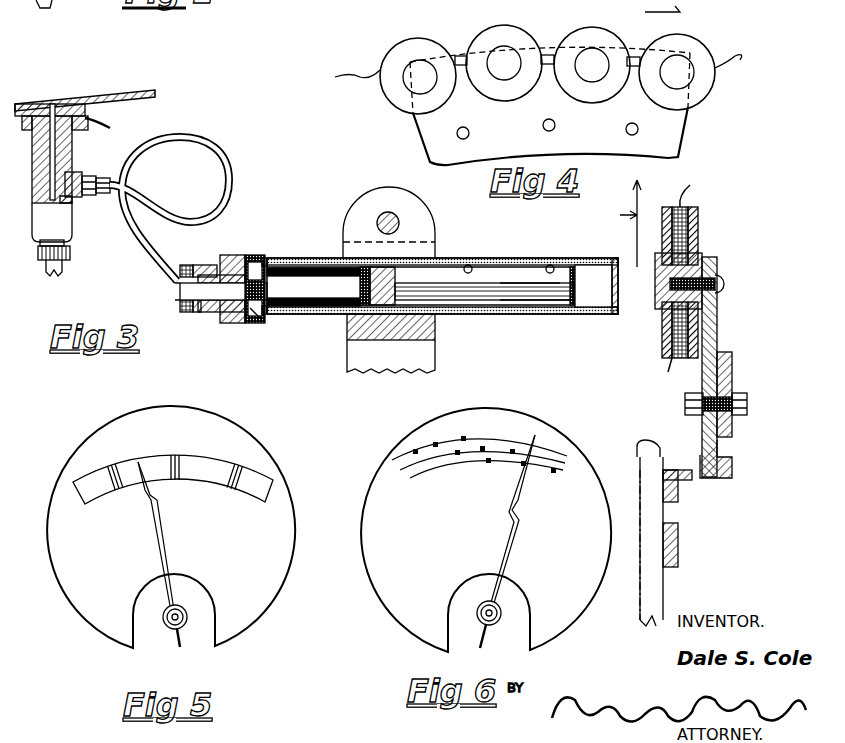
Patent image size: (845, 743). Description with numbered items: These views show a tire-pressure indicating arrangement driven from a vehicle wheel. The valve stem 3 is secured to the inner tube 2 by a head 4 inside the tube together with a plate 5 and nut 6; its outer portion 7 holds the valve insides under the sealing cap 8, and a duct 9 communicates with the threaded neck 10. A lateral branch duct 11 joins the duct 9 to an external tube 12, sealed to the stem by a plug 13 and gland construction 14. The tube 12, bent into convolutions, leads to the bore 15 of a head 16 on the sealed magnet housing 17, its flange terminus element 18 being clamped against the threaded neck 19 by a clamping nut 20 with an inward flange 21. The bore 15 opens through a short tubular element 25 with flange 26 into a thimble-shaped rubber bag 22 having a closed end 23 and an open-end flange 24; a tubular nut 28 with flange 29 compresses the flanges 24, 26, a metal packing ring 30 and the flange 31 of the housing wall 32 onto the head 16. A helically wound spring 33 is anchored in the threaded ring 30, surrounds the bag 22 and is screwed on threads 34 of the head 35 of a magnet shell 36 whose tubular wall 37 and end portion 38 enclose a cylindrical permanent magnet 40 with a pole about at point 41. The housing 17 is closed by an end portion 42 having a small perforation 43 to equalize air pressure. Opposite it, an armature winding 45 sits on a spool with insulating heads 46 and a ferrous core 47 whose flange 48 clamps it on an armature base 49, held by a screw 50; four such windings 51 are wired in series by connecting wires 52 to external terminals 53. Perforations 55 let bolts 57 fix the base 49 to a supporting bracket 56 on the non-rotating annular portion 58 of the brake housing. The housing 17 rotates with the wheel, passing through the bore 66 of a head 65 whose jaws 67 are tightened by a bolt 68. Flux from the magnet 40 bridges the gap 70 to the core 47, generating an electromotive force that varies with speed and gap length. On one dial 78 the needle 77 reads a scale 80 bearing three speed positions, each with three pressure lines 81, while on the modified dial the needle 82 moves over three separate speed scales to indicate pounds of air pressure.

In FIG. 3, the inner tube 2 is at (127, 94).
In FIG. 3, the valve stem 3 is at (70, 146).
In FIG. 3, the head 4 is at (28, 104).
In FIG. 3, the plate 5 is at (108, 125).
In FIG. 3, the nut 6 is at (63, 131).
In FIG. 3, the portion containing the valve insides 7 is at (58, 225).
In FIG. 3, the sealing cap 8 is at (64, 270).
In FIG. 3, the duct 9 is at (50, 165).
In FIG. 3, the threaded neck 10 is at (40, 243).
In FIG. 3, the branch duct 11 is at (72, 202).
In FIG. 3, the external tube 12 is at (160, 142).
In FIG. 3, the plug 13 is at (82, 178).
In FIG. 3, the gland construction 14 is at (104, 178).
In FIG. 3, the bore 15 is at (232, 323).
In FIG. 3, the head 16 is at (225, 312).
In FIG. 3, the magnet housing 17 is at (483, 258).
In FIG. 3, the flange terminus element 18 is at (184, 312).
In FIG. 3, the threaded neck 19 is at (196, 314).
In FIG. 3, the clamping nut 20 is at (198, 264).
In FIG. 3, the flange 21 is at (180, 274).
In FIG. 3, the rubber bag 22 is at (300, 315).
In FIG. 3, the closed end 23 is at (355, 289).
In FIG. 3, the flange 24 is at (252, 256).
In FIG. 3, the tubular element 25 is at (262, 288).
In FIG. 3, the flange 26 is at (254, 323).
In FIG. 3, the tubular nut 28 is at (262, 262).
In FIG. 3, the flange 29 is at (267, 258).
In FIG. 3, the packing ring 30 is at (260, 323).
In FIG. 3, the flange 31 is at (266, 315).
In FIG. 3, the housing wall 32 is at (515, 258).
In FIG. 3, the helically wound spring 33 is at (310, 262).
In FIG. 3, the threads 34 is at (400, 292).
In FIG. 3, the head 35 is at (395, 280).
In FIG. 3, the magnet shell 36 is at (552, 265).
In FIG. 3, the cylindrical tubular wall 37 is at (468, 265).
In FIG. 3, the end portion 38 is at (578, 280).
In FIG. 3, the permanent magnet 40 is at (532, 287).
In FIG. 3, the magnet pole 41 is at (565, 287).
In FIG. 3, the end portion 42 is at (617, 266).
In FIG. 3, the perforation 43 is at (618, 290).
In FIG. 3, the armature winding 45 is at (700, 222).
In FIG. 3, the insulating heads 46 is at (700, 242).
In FIG. 3, the ferrous core 47 is at (660, 309).
In FIG. 3, the flange 48 is at (664, 320).
In FIG. 3, the armature base 49 is at (718, 305).
In FIG. 4, the armature base 49 is at (678, 130).
In FIG. 3, the screw 50 is at (728, 277).
In FIG. 3, the armature windings 51 is at (711, 191).
In FIG. 4, the armature windings 51 is at (606, 106).
In FIG. 4, the connecting wires 52 is at (633, 57).
In FIG. 4, the external terminals 53 is at (742, 58).
In FIG. 3, the perforations 55 is at (732, 378).
In FIG. 4, the perforations 55 is at (543, 128).
In FIG. 3, the supporting bracket 56 is at (732, 450).
In FIG. 3, the bolts 57 is at (748, 405).
In FIG. 3, the non-rotating annular portion of the wheel brake housing 58 is at (660, 588).
In FIG. 3, the head 65 is at (405, 358).
In FIG. 3, the bore 66 is at (388, 328).
In FIG. 3, the jaws 67 is at (420, 215).
In FIG. 3, the bolt 68 is at (386, 212).
In FIG. 3, the air gap 70 is at (640, 283).
In FIG. 5, the indicating needle 77 is at (165, 545).
In FIG. 5, the dial 78 is at (278, 580).
In FIG. 5, the scale 80 is at (200, 462).
In FIG. 5, the lines 81 is at (121, 462).
In FIG. 6, the lines 81 is at (555, 618).
In FIG. 6, the needle 82 is at (508, 547).